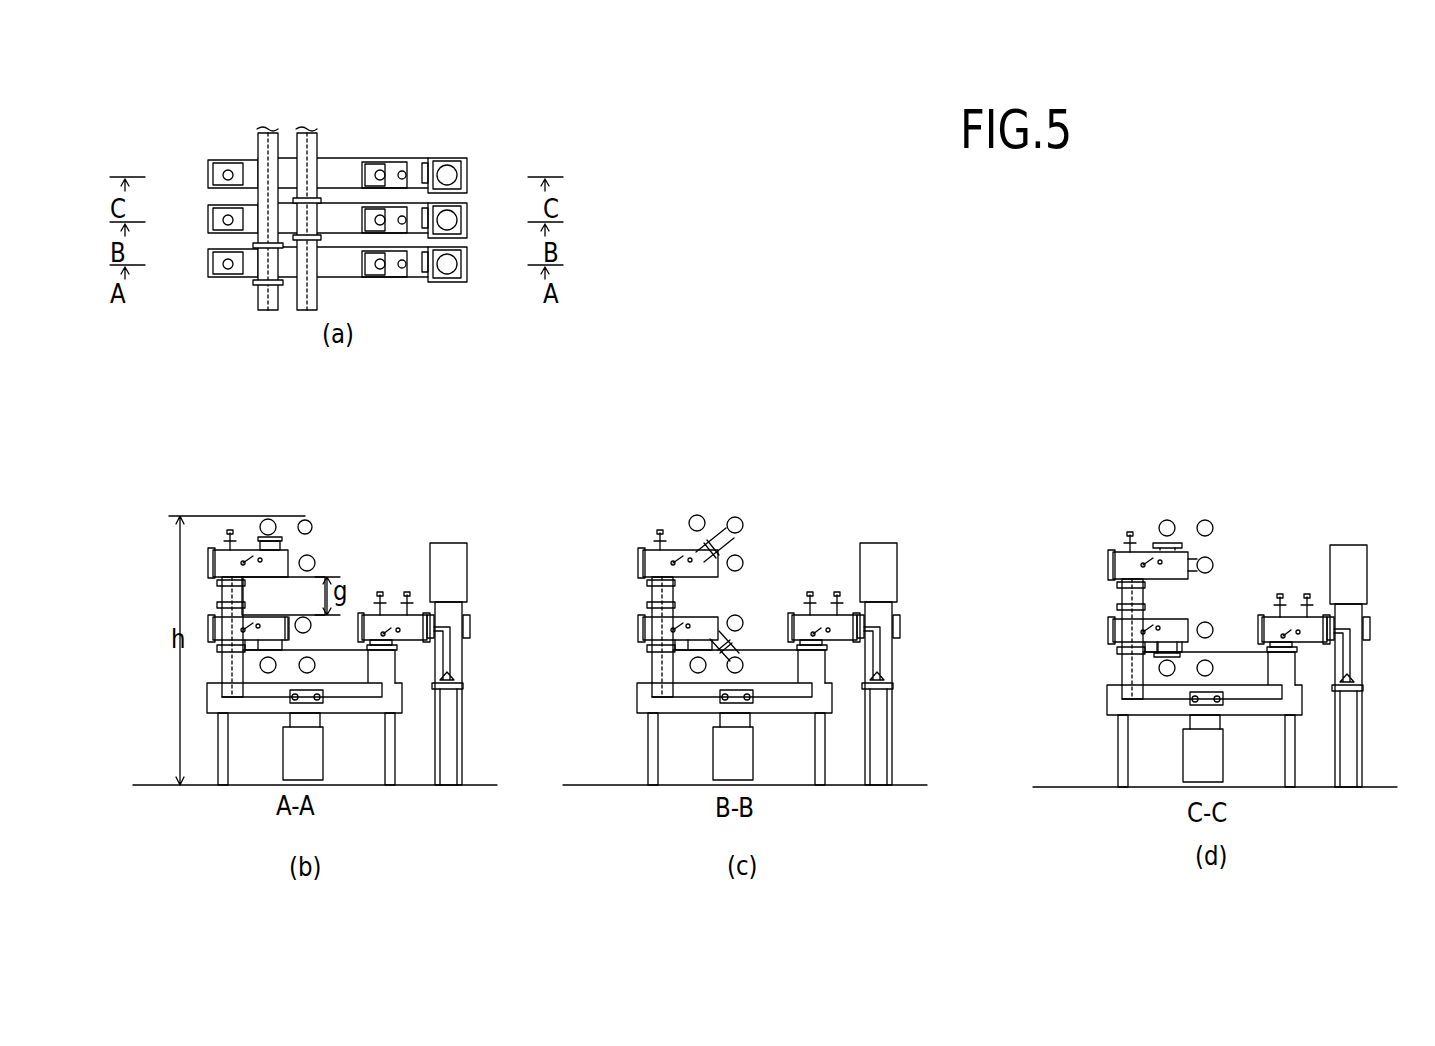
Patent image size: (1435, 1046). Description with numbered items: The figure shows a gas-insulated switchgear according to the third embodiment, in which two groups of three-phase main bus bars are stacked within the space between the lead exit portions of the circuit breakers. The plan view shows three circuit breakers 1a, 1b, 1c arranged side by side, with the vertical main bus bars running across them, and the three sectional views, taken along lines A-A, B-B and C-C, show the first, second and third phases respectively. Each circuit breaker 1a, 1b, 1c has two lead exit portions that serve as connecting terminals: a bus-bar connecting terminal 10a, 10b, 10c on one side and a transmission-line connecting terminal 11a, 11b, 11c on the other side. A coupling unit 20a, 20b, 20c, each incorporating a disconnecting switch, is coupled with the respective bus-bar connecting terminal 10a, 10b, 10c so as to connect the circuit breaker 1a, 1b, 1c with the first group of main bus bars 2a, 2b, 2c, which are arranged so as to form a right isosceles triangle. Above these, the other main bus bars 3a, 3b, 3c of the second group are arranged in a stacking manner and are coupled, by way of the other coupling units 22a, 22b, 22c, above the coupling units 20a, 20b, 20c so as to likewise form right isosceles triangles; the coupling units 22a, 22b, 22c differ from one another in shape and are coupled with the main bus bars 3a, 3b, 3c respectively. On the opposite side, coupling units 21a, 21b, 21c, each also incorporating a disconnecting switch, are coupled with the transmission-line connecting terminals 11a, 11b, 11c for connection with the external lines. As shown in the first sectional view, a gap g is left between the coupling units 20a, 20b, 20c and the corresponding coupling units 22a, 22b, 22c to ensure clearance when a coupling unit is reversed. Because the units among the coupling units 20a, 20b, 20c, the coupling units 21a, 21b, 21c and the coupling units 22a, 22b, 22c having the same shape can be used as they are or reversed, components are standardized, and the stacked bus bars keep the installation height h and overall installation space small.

The circuit breaker 1a is at (208, 265).
The circuit breaker 1b is at (208, 222).
The circuit breaker 1c is at (207, 177).
The main bus bar 2a is at (1255, 813).
The main bus bar 2b is at (307, 673).
The main bus bar 2c is at (258, 143).
The other main bus bar 3a is at (266, 518).
The other main bus bar 3b is at (307, 518).
The other main bus bar 3c is at (318, 143).
The bus-bar connecting terminal 10a is at (220, 665).
The bus-bar connecting terminal 10b is at (653, 668).
The bus-bar connecting terminal 10c is at (1115, 673).
The transmission-line connecting terminal 11a is at (395, 673).
The transmission-line connecting terminal 11b is at (825, 672).
The transmission-line connecting terminal 11c is at (1300, 672).
The coupling unit 20a is at (208, 632).
The coupling unit 20b is at (643, 632).
The coupling unit 20c is at (1108, 632).
The coupling unit 21a is at (466, 268).
The coupling unit 21b is at (463, 203).
The coupling unit 21c is at (458, 160).
The other coupling unit 22a is at (208, 568).
The other coupling unit 22b is at (643, 565).
The other coupling unit 22c is at (1108, 565).